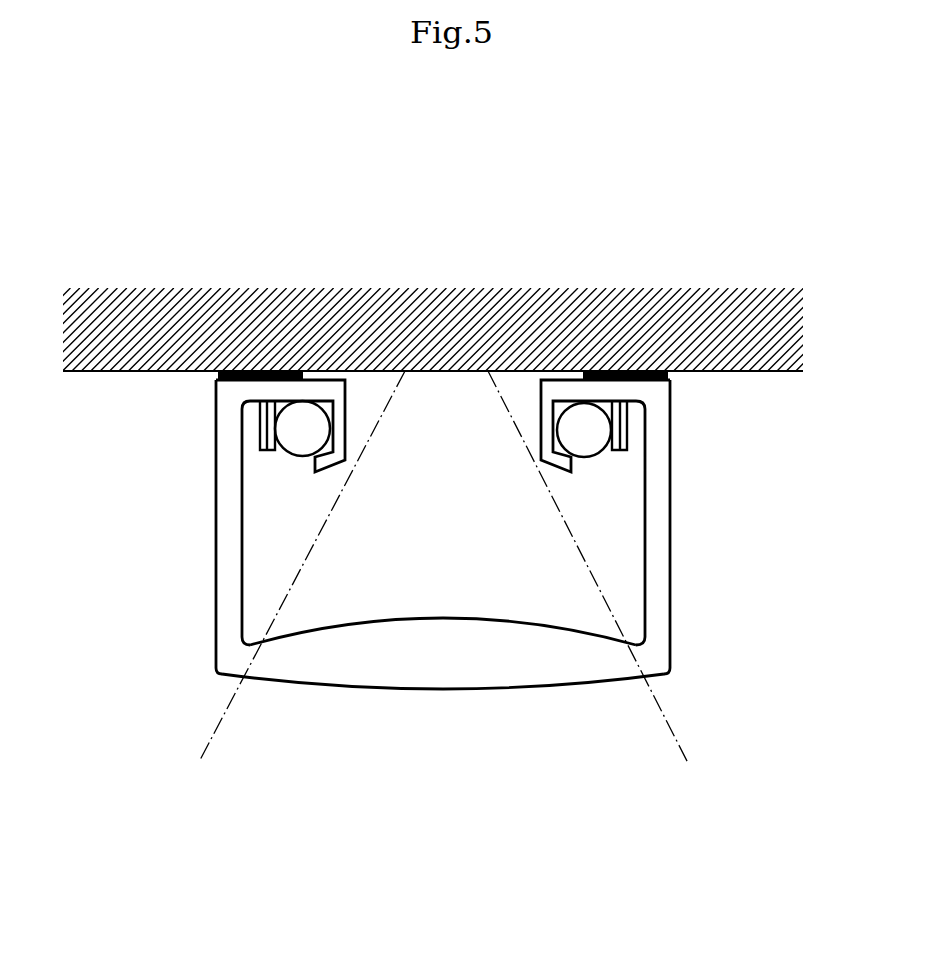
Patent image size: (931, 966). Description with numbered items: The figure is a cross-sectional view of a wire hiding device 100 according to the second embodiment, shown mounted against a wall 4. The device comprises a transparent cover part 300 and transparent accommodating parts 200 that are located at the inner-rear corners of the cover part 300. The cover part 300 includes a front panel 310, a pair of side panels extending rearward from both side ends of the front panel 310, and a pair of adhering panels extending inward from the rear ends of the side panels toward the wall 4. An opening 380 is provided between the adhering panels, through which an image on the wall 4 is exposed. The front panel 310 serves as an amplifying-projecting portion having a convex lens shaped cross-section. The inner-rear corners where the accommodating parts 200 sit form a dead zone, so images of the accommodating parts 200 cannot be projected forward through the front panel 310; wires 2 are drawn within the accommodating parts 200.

The wall 4 is at (777, 372).
The light emitting diode 2 is at (300, 433).
The wire hiding device 100 is at (442, 536).
The accommodating parts 200 is at (270, 470).
The cover part 300 is at (235, 659).
The front panel 310 is at (448, 667).
The opening 380 is at (458, 391).